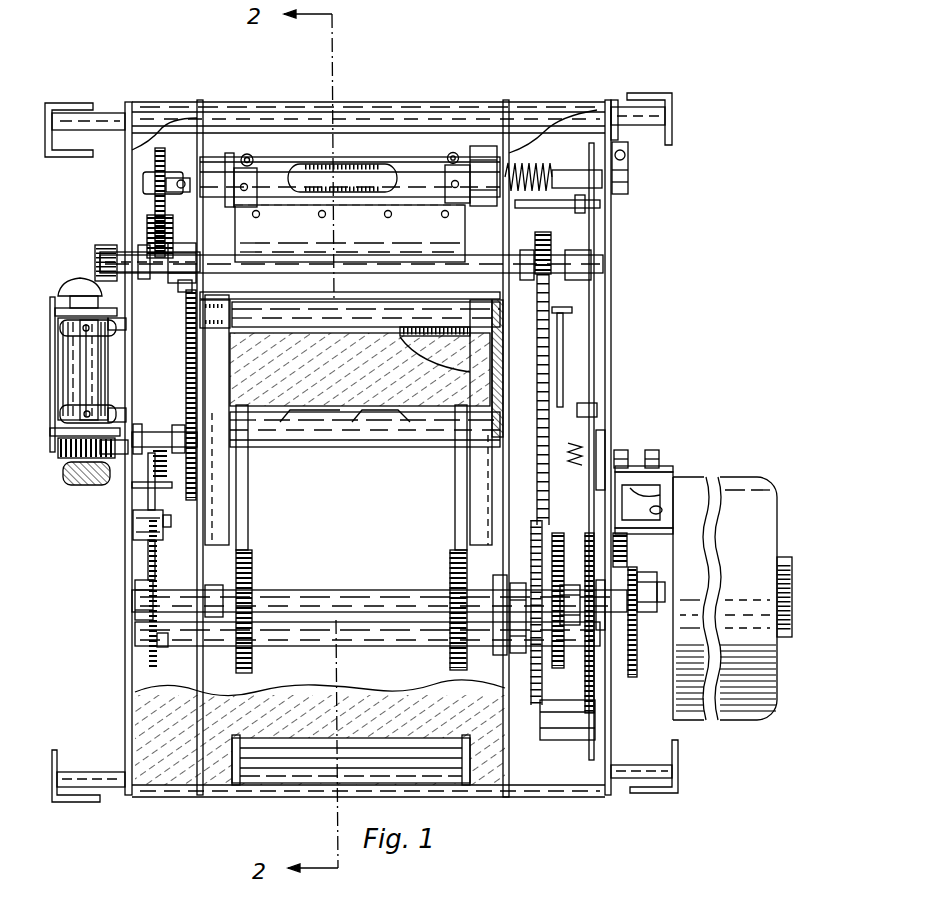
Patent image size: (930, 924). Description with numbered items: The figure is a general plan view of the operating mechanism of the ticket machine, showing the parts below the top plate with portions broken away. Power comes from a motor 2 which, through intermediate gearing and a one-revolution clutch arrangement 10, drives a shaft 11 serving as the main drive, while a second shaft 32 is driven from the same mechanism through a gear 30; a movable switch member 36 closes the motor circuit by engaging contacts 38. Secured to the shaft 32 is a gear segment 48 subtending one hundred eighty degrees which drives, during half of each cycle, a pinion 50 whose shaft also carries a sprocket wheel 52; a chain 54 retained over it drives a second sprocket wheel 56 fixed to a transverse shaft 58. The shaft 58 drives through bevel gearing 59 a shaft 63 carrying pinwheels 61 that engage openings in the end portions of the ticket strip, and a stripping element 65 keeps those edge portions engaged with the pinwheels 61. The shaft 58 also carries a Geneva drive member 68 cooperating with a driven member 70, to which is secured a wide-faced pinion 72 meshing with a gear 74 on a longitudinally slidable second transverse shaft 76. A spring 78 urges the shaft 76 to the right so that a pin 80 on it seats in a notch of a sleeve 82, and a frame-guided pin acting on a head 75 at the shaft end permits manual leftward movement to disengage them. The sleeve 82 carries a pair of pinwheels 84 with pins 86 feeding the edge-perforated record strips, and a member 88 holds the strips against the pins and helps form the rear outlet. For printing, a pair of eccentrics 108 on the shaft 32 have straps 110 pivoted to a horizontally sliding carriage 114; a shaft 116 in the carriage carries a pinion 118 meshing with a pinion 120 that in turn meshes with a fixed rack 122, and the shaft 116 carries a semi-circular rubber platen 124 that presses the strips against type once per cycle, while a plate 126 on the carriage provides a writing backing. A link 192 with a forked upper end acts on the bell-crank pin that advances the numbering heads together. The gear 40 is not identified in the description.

The motor 2 is at (690, 484).
The one-revolution clutch arrangement 10 is at (628, 562).
The shaft 11 is at (412, 594).
The gear 30 is at (595, 700).
The shaft 32 is at (348, 642).
The movable switch member 36 is at (660, 470).
The contacts 38 is at (621, 450).
The gear 40 is at (637, 636).
The gear segment 48 is at (531, 690).
The pinion 50 is at (518, 500).
The sprocket wheel 52 is at (518, 562).
The chain 54 is at (558, 375).
The second sprocket wheel 56 is at (548, 248).
The transverse shaft 58 is at (482, 272).
The bevel gearing 59 is at (96, 256).
The pinwheels 61 is at (108, 326).
The shaft 63 is at (88, 392).
The stripping element 65 is at (70, 345).
The Geneva drive member 68 is at (182, 293).
The driven member 70 is at (176, 278).
The pinion 72 is at (147, 225).
The gear 74 is at (155, 155).
The head 75 is at (630, 168).
The second transverse shaft 76 is at (168, 176).
The spring 78 is at (536, 165).
The pin 80 is at (145, 178).
The sleeve 82 is at (199, 165).
The pinwheels 84 is at (240, 182).
The pins 86 is at (250, 154).
The member 88 is at (383, 163).
The eccentrics 108 is at (256, 655).
The straps 110 is at (248, 478).
The carriage 114 is at (472, 376).
The shaft 116 is at (345, 310).
The pinion 118 is at (186, 385).
The pinion 120 is at (200, 291).
The fixed rack 122 is at (200, 303).
The semi-circular platen 124 is at (418, 338).
The plate 126 is at (322, 368).
The link 192 is at (515, 295).